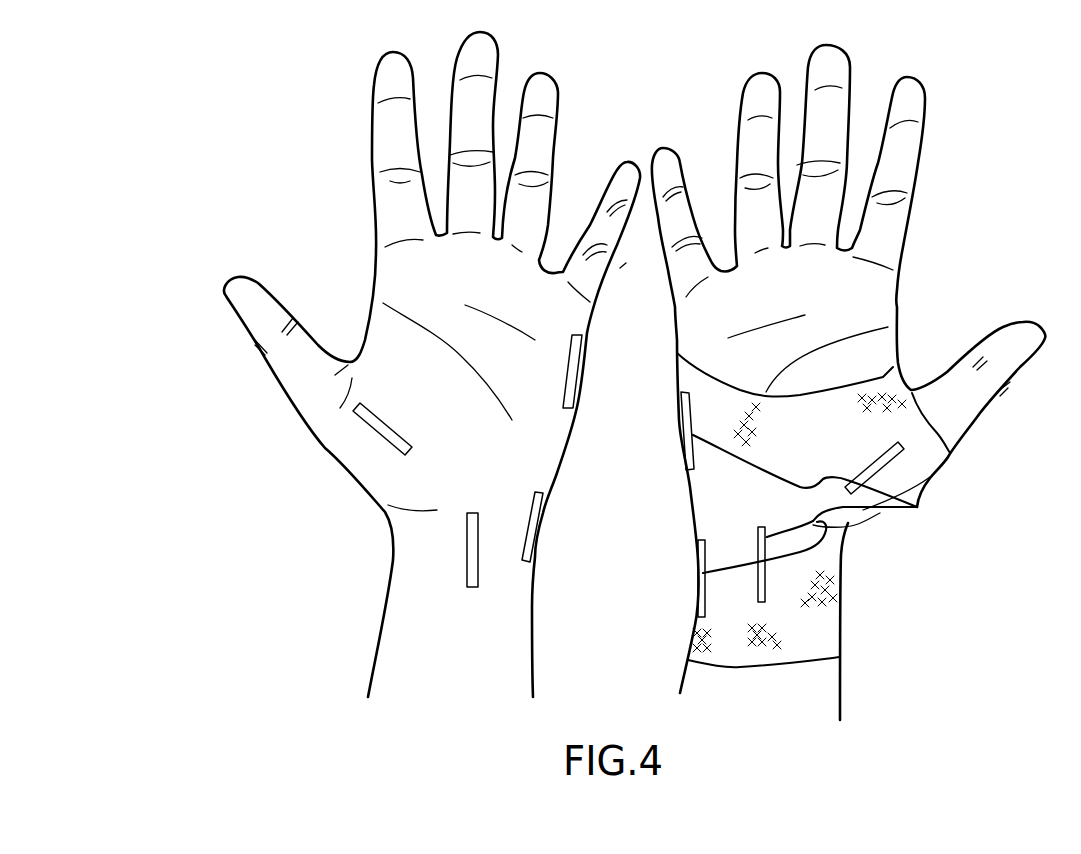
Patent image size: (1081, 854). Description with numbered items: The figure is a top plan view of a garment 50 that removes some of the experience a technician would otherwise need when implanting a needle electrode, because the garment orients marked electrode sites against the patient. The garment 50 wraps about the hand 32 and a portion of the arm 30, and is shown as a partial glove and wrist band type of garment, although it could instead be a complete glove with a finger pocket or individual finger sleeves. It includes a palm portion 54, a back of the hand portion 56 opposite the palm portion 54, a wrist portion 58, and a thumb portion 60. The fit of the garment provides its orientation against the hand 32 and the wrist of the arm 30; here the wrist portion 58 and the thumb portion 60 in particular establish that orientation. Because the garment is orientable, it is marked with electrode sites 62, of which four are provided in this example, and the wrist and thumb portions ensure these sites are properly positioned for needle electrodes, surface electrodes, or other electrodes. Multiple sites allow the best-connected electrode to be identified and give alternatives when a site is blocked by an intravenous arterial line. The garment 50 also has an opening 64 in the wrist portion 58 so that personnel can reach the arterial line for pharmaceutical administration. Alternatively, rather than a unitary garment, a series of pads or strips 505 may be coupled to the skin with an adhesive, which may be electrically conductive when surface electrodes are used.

The arm 30 is at (693, 670).
The hand 32 is at (893, 286).
The garment 50 is at (893, 368).
The palm portion 54 is at (717, 485).
The back of the hand portion 56 is at (666, 449).
The wrist portion 58 is at (843, 560).
The thumb portion 60 is at (922, 407).
The electrode sites 62 is at (893, 455).
The opening 64 is at (785, 620).
The pads or strips 505 is at (578, 368).